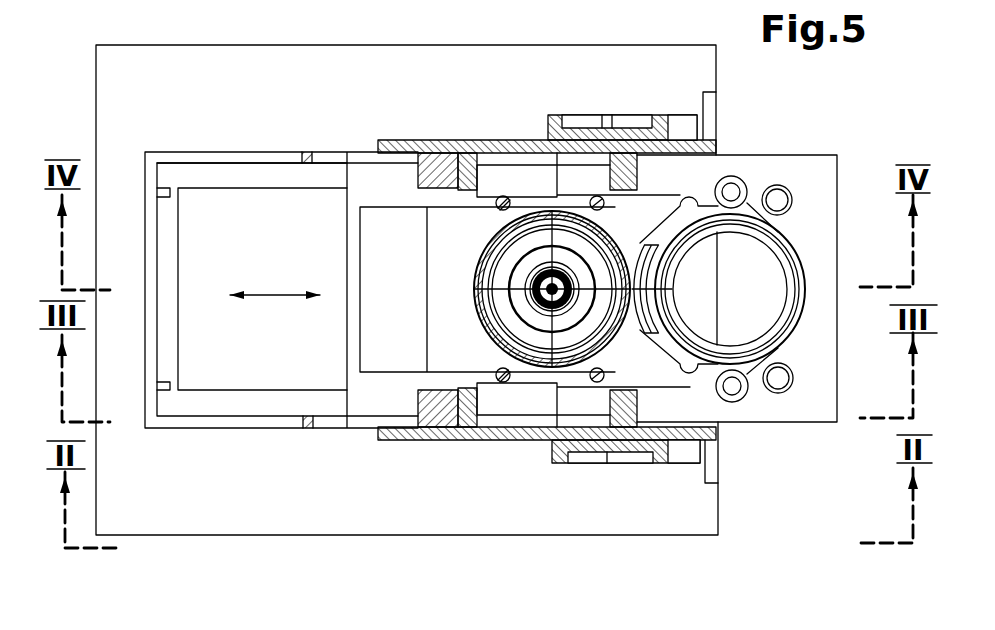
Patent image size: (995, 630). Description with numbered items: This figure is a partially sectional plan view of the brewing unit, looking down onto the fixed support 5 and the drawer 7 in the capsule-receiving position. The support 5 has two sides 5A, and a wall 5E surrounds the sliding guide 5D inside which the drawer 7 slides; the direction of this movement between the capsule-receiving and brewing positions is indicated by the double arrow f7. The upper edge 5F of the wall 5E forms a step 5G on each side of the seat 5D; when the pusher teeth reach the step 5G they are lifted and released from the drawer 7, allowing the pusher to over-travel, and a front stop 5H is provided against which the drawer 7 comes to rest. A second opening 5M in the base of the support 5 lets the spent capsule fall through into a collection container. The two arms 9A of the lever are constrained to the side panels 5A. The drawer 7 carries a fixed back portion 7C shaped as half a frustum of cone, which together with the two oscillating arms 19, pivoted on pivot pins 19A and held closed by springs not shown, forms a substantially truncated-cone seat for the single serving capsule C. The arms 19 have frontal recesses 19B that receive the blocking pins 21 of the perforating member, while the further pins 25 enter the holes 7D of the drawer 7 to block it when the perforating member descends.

The support 5 is at (336, 62).
The side 5A is at (505, 145).
The sliding guide 5D is at (255, 182).
The wall 5E is at (278, 152).
The upper edge 5F is at (231, 157).
The step 5G is at (313, 157).
The front stop 5H is at (180, 188).
The second opening 5M is at (288, 276).
The direction of movement of the drawer f7 is at (282, 298).
The drawer 7 is at (838, 192).
The fixed back portion 7C is at (774, 268).
The hole 7D is at (779, 200).
The arm 9A is at (610, 128).
The oscillating arm 19 is at (653, 250).
The pivot pin 19A is at (731, 192).
The recess 19B is at (637, 173).
The pin 21 is at (498, 209).
The pin 25 is at (604, 206).
The single serving capsule C is at (484, 275).